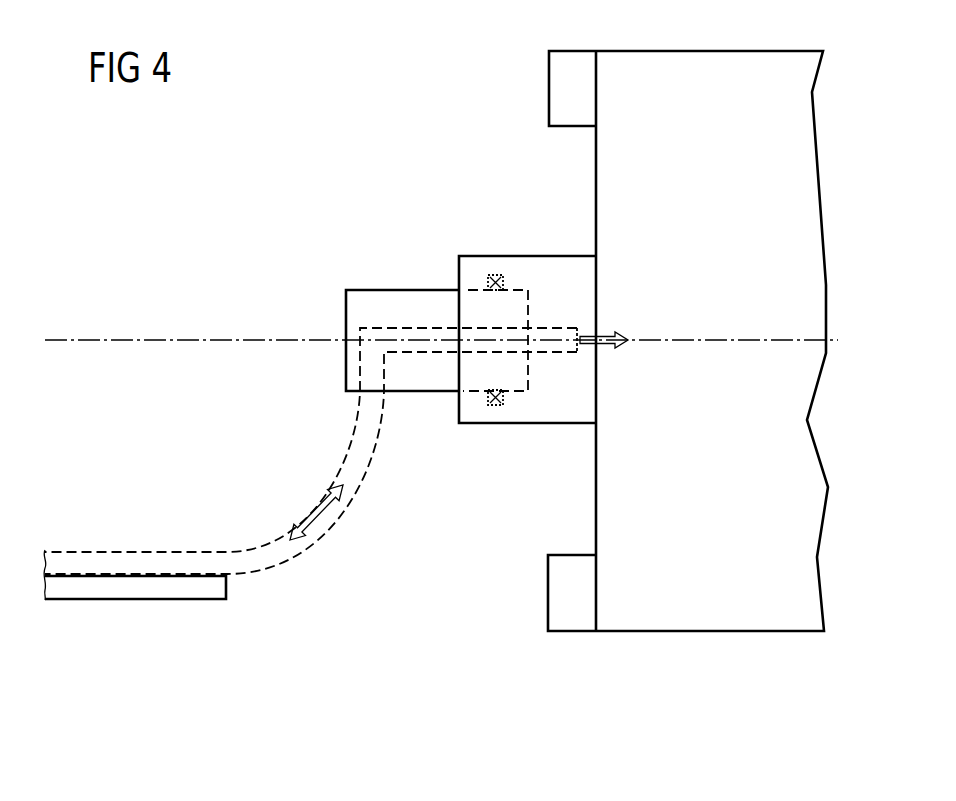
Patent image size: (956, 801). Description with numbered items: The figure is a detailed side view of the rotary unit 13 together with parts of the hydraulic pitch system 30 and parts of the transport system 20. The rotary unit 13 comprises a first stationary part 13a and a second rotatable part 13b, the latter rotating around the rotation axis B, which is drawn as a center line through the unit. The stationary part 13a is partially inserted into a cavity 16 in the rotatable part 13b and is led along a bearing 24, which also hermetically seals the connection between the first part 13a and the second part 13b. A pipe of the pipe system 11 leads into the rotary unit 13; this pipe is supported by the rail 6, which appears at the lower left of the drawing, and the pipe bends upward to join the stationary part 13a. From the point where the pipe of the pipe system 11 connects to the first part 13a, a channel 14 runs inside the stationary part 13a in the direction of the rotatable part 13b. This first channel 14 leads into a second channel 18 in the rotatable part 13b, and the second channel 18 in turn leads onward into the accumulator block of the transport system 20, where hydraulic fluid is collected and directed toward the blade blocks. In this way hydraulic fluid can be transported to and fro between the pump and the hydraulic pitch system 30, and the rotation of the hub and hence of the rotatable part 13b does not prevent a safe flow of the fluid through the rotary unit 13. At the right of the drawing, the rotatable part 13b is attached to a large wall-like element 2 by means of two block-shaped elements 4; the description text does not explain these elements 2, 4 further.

The housing wall 2 is at (660, 614).
The holders 4 is at (562, 90).
The rail 6 is at (208, 593).
The pipe system 11 is at (325, 523).
The rotary unit 13 is at (471, 272).
The first stationary part 13a is at (387, 292).
The second rotatable part 13b is at (480, 265).
The channel 14 is at (430, 353).
The cavity 16 is at (522, 283).
The second channel 18 is at (557, 355).
The transport system 20 is at (152, 630).
The bearing 24 is at (505, 400).
The hydraulic pitch system 30 is at (730, 677).
The rotation axis B is at (670, 340).